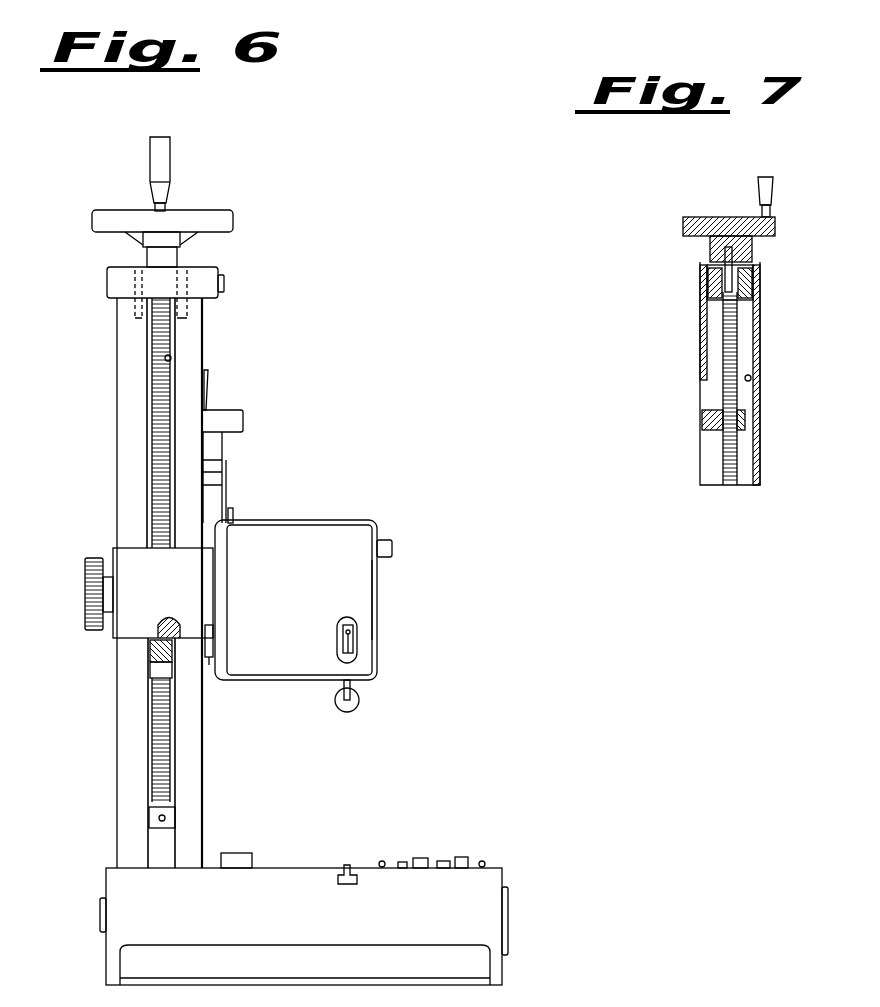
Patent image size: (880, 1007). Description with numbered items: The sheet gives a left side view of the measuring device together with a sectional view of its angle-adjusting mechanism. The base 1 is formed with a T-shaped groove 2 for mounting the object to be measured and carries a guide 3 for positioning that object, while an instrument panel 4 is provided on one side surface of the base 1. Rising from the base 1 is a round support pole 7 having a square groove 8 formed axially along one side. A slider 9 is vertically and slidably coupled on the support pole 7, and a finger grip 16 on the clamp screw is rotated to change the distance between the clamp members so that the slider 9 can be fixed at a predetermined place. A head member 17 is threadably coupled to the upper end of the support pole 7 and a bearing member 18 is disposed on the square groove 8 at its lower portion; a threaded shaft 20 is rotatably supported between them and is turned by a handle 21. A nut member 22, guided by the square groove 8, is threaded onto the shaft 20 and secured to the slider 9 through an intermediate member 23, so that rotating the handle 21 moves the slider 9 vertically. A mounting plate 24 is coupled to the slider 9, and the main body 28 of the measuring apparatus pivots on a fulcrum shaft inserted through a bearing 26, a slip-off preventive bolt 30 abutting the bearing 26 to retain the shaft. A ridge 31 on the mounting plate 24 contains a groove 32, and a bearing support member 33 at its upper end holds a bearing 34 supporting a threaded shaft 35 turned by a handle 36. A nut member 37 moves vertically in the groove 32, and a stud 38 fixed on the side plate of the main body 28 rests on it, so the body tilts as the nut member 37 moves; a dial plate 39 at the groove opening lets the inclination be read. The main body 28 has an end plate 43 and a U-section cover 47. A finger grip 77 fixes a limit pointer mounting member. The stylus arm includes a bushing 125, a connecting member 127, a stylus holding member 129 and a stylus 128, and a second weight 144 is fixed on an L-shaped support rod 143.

In FIG. 6, the base 1 is at (272, 872).
In FIG. 6, the T shaped groove 2 is at (347, 865).
In FIG. 6, the guide 3 is at (235, 858).
In FIG. 6, the instrument panel 4 is at (418, 858).
In FIG. 6, the support pole 7 is at (196, 362).
In FIG. 6, the square groove 8 is at (172, 358).
In FIG. 6, the slider 9 is at (113, 553).
In FIG. 6, the finger grip 16 is at (90, 582).
In FIG. 6, the head member 17 is at (217, 276).
In FIG. 6, the bearing member 18 is at (152, 820).
In FIG. 6, the threaded shaft 20 is at (157, 387).
In FIG. 6, the handle 21 is at (203, 217).
In FIG. 6, the nut member 22 is at (150, 672).
In FIG. 6, the intermediate member 23 is at (150, 655).
In FIG. 6, the mounting plate 24 is at (222, 535).
In FIG. 6, the bearing 26 is at (210, 665).
In FIG. 6, the main body of the measuring apparatus 28 is at (310, 530).
In FIG. 6, the slip-off preventive bolt 30 is at (205, 632).
In FIG. 6, the ridge 31 is at (217, 500).
In FIG. 7, the ridge 31 is at (760, 325).
In FIG. 7, the groove 32 is at (752, 376).
In FIG. 6, the bearing support member 33 is at (215, 470).
In FIG. 7, the bearing support member 33 is at (757, 273).
In FIG. 7, the bearing 34 is at (712, 283).
In FIG. 7, the threaded shaft 35 is at (723, 375).
In FIG. 6, the handle 36 is at (229, 416).
In FIG. 7, the handle 36 is at (708, 218).
In FIG. 7, the nut member 37 is at (702, 426).
In FIG. 7, the stud 38 is at (706, 404).
In FIG. 6, the dial plate 39 is at (228, 472).
In FIG. 7, the dial plate 39 is at (700, 322).
In FIG. 6, the end plate 43 is at (361, 526).
In FIG. 6, the cover 47 is at (378, 584).
In FIG. 6, the finger grip 77 is at (386, 542).
In FIG. 6, the bushing 125 is at (348, 618).
In FIG. 6, the connecting member 127 is at (355, 645).
In FIG. 6, the stylus 128 is at (346, 646).
In FIG. 6, the stylus holding member 129 is at (344, 630).
In FIG. 6, the support rod 143 is at (372, 686).
In FIG. 6, the second weight 144 is at (359, 705).